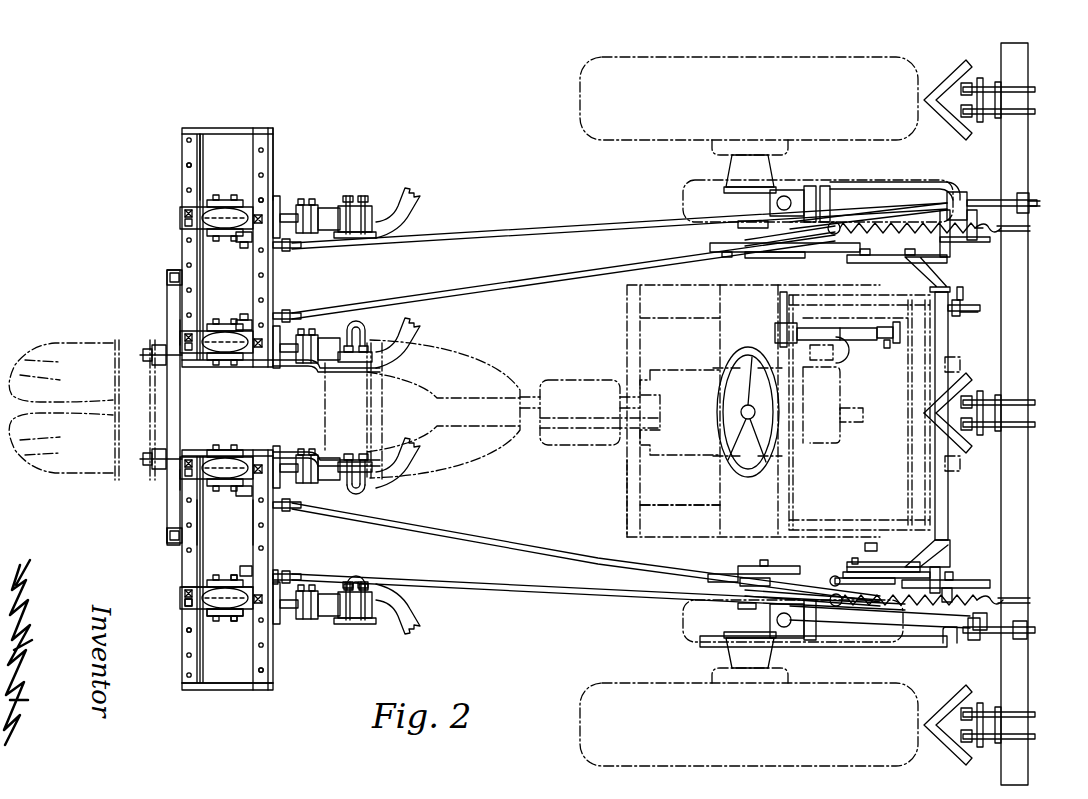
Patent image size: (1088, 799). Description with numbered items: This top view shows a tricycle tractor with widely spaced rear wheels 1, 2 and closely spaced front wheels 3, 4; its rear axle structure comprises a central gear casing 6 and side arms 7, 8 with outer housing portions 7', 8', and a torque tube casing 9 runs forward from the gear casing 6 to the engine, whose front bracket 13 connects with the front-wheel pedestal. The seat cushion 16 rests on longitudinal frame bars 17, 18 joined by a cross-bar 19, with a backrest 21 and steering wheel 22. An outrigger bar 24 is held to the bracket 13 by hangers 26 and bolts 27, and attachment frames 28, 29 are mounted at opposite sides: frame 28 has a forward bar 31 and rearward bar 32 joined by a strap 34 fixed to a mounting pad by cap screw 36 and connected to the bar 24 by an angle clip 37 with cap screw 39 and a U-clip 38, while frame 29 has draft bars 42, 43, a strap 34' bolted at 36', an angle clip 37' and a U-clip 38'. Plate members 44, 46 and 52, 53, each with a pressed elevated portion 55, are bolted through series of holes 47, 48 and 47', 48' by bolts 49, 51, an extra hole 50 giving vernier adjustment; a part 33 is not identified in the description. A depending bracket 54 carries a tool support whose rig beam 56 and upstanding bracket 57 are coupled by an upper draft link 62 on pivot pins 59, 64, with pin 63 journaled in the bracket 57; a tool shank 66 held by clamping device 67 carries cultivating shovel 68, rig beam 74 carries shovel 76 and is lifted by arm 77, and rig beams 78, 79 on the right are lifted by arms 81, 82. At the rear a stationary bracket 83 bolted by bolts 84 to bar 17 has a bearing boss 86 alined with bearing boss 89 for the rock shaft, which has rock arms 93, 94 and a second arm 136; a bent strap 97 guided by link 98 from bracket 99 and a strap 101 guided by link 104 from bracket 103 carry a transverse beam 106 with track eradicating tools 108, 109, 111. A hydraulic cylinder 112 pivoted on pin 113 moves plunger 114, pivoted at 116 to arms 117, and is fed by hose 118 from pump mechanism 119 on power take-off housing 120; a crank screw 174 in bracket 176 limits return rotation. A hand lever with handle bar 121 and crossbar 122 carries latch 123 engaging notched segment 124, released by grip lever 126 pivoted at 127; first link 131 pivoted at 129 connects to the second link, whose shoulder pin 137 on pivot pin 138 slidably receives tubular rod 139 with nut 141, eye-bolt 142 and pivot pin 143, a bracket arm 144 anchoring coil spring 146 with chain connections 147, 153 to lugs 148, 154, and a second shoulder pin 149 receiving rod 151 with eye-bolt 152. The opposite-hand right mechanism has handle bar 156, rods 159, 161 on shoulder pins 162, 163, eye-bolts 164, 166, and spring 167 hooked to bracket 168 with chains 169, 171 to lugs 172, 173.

The rear wheel 1 is at (642, 760).
The rear wheel 2 is at (636, 136).
The front wheel 3 is at (40, 446).
The front wheel 4 is at (56, 358).
The central gear casing 6 is at (680, 373).
The side arm 7 is at (741, 411).
The outer housing portion 7' is at (783, 623).
The side arm 8 is at (712, 411).
The outer housing portion 8' is at (808, 201).
The torque tube casing 9 is at (490, 396).
The bracket 13 is at (165, 376).
The seat cushion 16 is at (866, 490).
The longitudinal frame bar 17 is at (666, 512).
The longitudinal frame bar 18 is at (666, 312).
The cross-bar 19 is at (630, 473).
The backrest 21 is at (958, 384).
The steering wheel 22 is at (723, 389).
The outrigger bar 24 is at (167, 291).
The hanger 26 is at (156, 345).
The bolt 27 is at (145, 356).
The attachment frame 28 is at (182, 665).
The attachment frame 29 is at (182, 156).
The forward bar 31 is at (197, 522).
The rearward bar 32 is at (258, 522).
The frame end bar 33 is at (225, 689).
The strap 34 is at (326, 448).
The strap 34' is at (326, 374).
The cap screw 36 is at (353, 457).
The bolted connection 36' is at (353, 354).
The angle clip 37 is at (159, 546).
The angle clip 37' is at (165, 265).
The U-clip 38 is at (158, 482).
The U-clip 38' is at (158, 323).
The cap screw 39 is at (168, 537).
The draft bar 42 is at (202, 166).
The draft bar 43 is at (272, 162).
The plate member 44 is at (183, 581).
The plate member 46 is at (200, 487).
The holes 47 is at (169, 639).
The holes 47' is at (168, 176).
The holes 48 is at (280, 664).
The holes 48' is at (281, 187).
The screw bolt 49 is at (182, 608).
The second hole 50 is at (182, 593).
The bolt 51 is at (276, 574).
The plate member 52 is at (182, 218).
The plate member 53 is at (205, 367).
The bracket 54 is at (218, 611).
The oblong elevated portion 55 is at (248, 208).
The rig beam 56 is at (412, 614).
The bracket 57 is at (334, 610).
The pivot pin 59 is at (235, 570).
The upper draft link 62 is at (285, 598).
The pin 63 is at (318, 622).
The pivot pin 64 is at (238, 630).
The tool shank 66 is at (366, 584).
The clamping device 67 is at (372, 618).
The cultivating shovel 68 is at (345, 570).
The rig beam 74 is at (410, 462).
The cultivating shovel 76 is at (358, 498).
The arm 77 is at (242, 495).
The rig beam 78 is at (405, 217).
The rig beam 79 is at (400, 346).
The arm 81 is at (232, 236).
The arm 82 is at (240, 322).
The stationary bracket 83 is at (890, 560).
The bolt 84 is at (866, 545).
The bearing boss 86 is at (950, 548).
The bearing boss 89 is at (950, 283).
The rock arm 93 is at (1036, 630).
The rock arm 94 is at (1037, 204).
The bent strap 97 is at (980, 630).
The link 98 is at (872, 647).
The bracket 99 is at (770, 640).
The strap 101 is at (988, 200).
The bracket 103 is at (790, 190).
The link 104 is at (889, 182).
The transverse beam 106 is at (1028, 292).
The track eradicating tool 108 is at (964, 758).
The track eradicating tool 109 is at (964, 72).
The track eradicating tool 111 is at (968, 440).
The hydraulic cylinder 112 is at (845, 328).
The pin 113 is at (781, 313).
The plunger 114 is at (882, 327).
The pivotal connection 116 is at (889, 344).
The arm 117 is at (852, 349).
The hose 118 is at (836, 355).
The pump mechanism 119 is at (830, 378).
The power take-off housing 120 is at (834, 443).
The handle bar 121 is at (738, 568).
The crossbar 122 is at (891, 560).
The latch 123 is at (840, 576).
The notched segment 124 is at (855, 562).
The grip lever 126 is at (708, 575).
The pivot 127 is at (770, 578).
The pivot center 129 is at (880, 606).
The first link 131 is at (945, 576).
The second arm 136 is at (1000, 588).
The shoulder pin 137 is at (943, 643).
The pivot pin 138 is at (972, 640).
The tubular rod 139 is at (596, 584).
The nut 141 is at (303, 567).
The eye-bolt 142 is at (288, 574).
The pivot pin 143 is at (245, 566).
The bracket arm 144 is at (1030, 600).
The coil spring 146 is at (845, 612).
The chain connection 147 is at (822, 605).
The lug 148 is at (745, 608).
The shoulder pin 149 is at (956, 587).
The second tubular rod 151 is at (600, 562).
The eye-bolt 152 is at (288, 507).
The chain connection 153 is at (798, 590).
The lug 154 is at (768, 566).
The handle bar 156 is at (845, 258).
The tubular rod 159 is at (522, 240).
The tubular rod 161 is at (508, 276).
The shoulder pin 162 is at (964, 193).
The shoulder pin 163 is at (955, 246).
The eye-bolt 164 is at (285, 249).
The eye-bolt 166 is at (282, 312).
The spring 167 is at (878, 220).
The bracket 168 is at (1031, 229).
The chain 169 is at (812, 232).
The chain 171 is at (810, 253).
The lug 172 is at (750, 221).
The lug 173 is at (745, 254).
The crank screw 174 is at (968, 318).
The bracket 176 is at (956, 308).